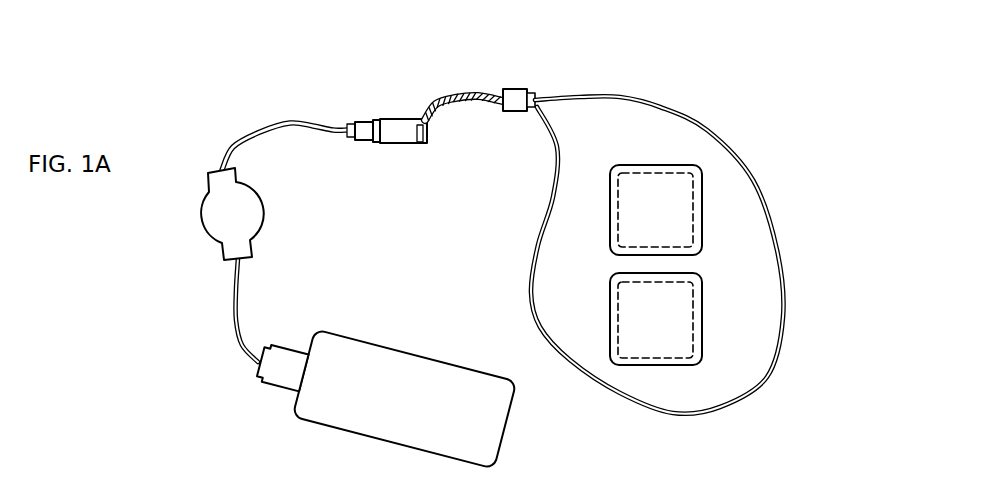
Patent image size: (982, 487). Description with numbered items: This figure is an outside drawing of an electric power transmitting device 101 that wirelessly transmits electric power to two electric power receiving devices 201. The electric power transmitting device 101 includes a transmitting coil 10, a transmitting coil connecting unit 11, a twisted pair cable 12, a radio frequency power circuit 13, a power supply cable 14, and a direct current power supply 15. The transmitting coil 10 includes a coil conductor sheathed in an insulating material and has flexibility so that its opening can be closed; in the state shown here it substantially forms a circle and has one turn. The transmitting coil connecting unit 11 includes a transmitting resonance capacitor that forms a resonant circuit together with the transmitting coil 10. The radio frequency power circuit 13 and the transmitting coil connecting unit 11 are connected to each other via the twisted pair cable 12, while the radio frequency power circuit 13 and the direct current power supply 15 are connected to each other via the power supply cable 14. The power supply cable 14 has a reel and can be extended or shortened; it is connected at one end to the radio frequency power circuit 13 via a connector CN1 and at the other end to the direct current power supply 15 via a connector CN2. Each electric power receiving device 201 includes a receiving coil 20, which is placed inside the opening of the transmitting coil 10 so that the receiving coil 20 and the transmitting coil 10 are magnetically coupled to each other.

The electric power transmitting device 101 is at (761, 45).
The power supply cable 14 is at (265, 122).
The connector CN1 is at (379, 110).
The radio frequency power circuit 13 is at (402, 125).
The twisted pair cable 12 is at (470, 93).
The transmitting coil connecting unit 11 is at (518, 88).
The transmitting coil 10 is at (707, 133).
The electric power receiving device 201 is at (714, 184).
The receiving coil 20 is at (702, 213).
The direct current power supply 15 is at (408, 368).
The connector CN2 is at (303, 338).